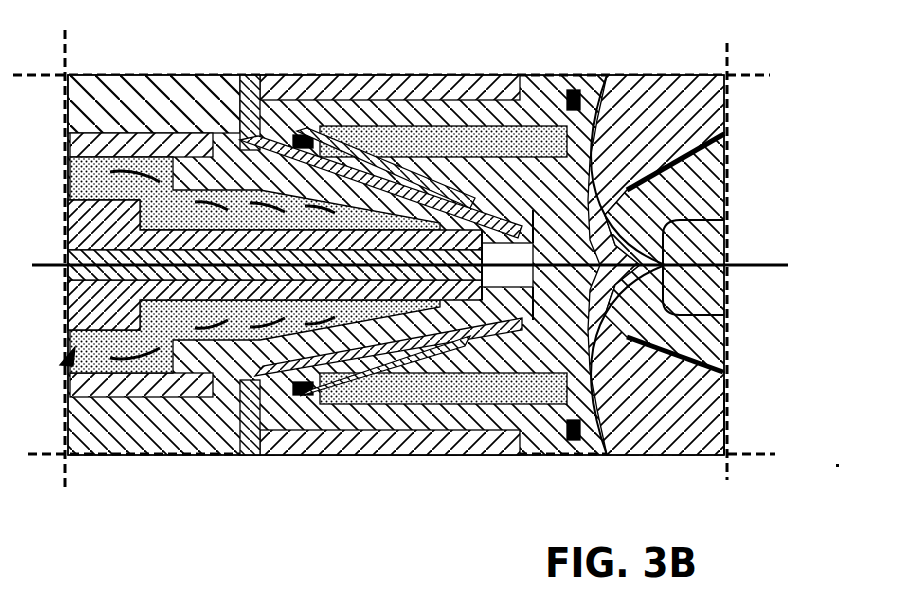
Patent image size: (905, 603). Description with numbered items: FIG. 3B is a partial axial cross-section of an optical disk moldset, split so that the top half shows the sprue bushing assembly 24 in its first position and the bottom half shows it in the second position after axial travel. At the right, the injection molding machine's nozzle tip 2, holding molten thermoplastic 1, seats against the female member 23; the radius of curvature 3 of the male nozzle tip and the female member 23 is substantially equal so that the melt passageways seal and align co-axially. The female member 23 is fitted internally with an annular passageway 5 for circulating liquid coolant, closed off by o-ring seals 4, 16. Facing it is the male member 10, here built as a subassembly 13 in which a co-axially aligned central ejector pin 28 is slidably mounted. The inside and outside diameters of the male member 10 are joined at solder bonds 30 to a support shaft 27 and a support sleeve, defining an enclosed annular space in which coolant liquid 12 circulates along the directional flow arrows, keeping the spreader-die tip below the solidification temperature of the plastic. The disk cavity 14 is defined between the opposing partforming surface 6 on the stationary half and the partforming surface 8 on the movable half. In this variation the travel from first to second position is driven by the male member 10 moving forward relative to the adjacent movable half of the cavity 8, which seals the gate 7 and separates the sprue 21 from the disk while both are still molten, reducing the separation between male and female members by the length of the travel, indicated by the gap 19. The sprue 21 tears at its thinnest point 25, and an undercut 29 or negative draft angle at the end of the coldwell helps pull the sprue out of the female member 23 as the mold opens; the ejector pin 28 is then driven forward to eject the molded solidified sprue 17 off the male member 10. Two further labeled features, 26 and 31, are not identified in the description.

The molten thermoplastic 1 is at (710, 247).
The nozzle tip 2 is at (729, 192).
The radius of curvature 3 is at (603, 110).
The o-ring seal 4 is at (580, 78).
The annular passageway 5 is at (480, 147).
The partforming surface 6 is at (327, 88).
The gate 7 is at (242, 92).
The partforming surface 8 is at (176, 128).
The male member 10 is at (90, 153).
The coolant liquid 12 is at (70, 182).
The subassembly 13 is at (68, 353).
The cavity 14 is at (247, 437).
The o-ring seal 16 is at (307, 430).
The molded solidified sprue 17 is at (372, 417).
The gap 19 is at (543, 433).
The sprue 21 is at (610, 390).
The female member 23 is at (653, 413).
The sprue bushing assembly 24 is at (726, 415).
The thinnest point 25 is at (723, 343).
The central axis 26 is at (743, 267).
The support shaft 27 is at (80, 218).
The central ejector pin 28 is at (105, 278).
The undercut 29 is at (500, 407).
The solder bond 30 is at (110, 300).
The flow channel 31 is at (420, 413).